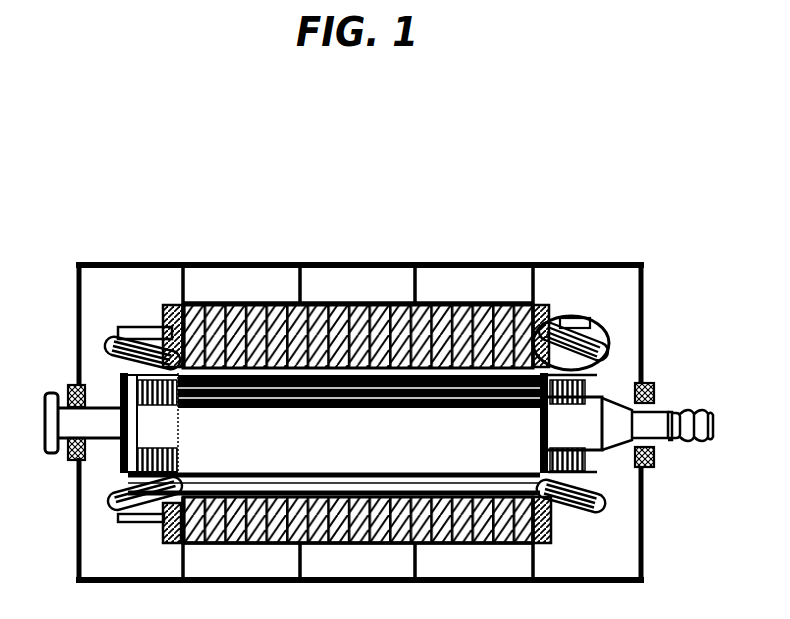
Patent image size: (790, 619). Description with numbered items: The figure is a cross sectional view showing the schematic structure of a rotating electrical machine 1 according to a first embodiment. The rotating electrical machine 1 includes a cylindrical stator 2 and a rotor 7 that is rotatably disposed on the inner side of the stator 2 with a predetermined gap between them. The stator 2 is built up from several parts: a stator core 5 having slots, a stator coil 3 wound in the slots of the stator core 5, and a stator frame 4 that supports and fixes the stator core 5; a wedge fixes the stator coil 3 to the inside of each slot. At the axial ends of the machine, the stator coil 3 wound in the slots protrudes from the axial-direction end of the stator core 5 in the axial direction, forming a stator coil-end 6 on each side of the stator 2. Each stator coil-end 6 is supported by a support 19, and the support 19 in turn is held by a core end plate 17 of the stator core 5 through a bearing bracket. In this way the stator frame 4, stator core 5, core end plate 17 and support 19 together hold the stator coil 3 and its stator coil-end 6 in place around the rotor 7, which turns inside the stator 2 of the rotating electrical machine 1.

The rotating electrical machine 1 is at (383, 191).
The stator 2 is at (283, 172).
The stator coil 3 is at (122, 317).
The stator frame 4 is at (188, 303).
The stator core 5 is at (240, 307).
The stator coil-end 6 is at (599, 317).
The rotor 7 is at (147, 421).
The core end plate 17 is at (173, 303).
The support 19 is at (149, 327).